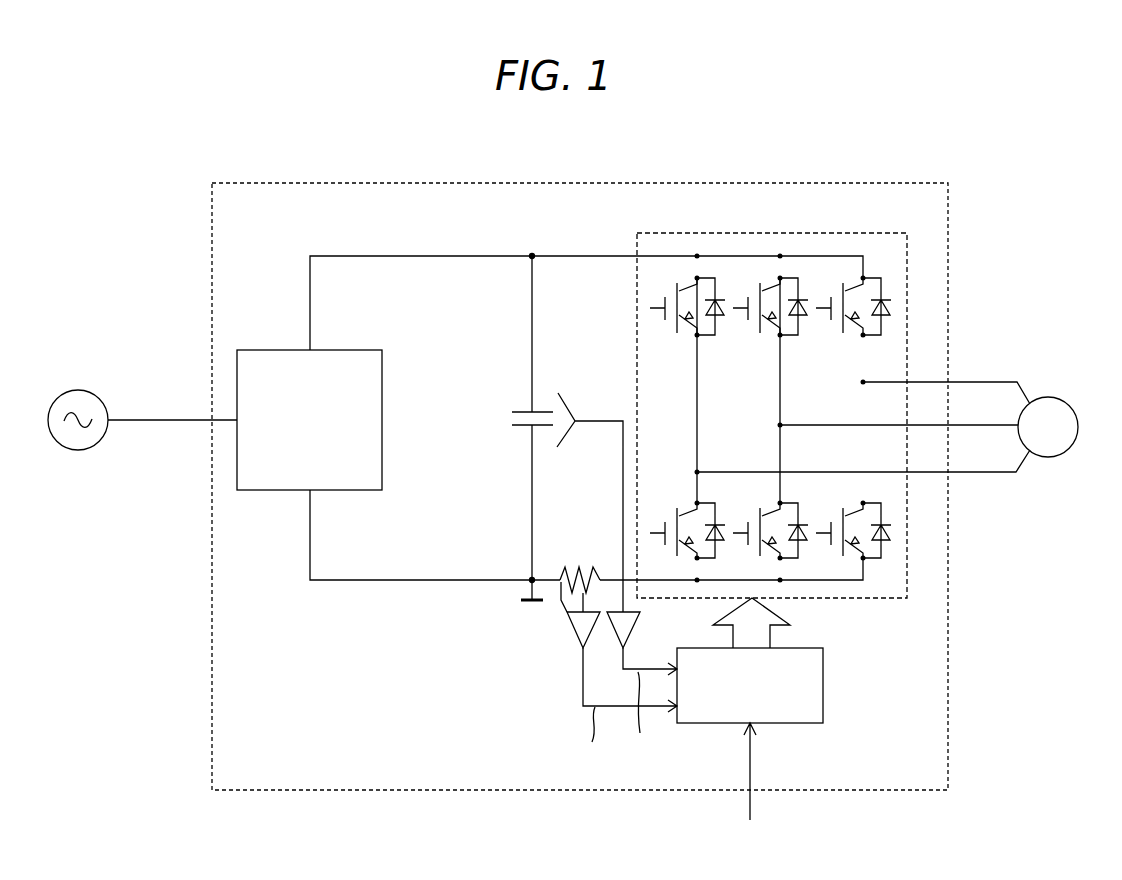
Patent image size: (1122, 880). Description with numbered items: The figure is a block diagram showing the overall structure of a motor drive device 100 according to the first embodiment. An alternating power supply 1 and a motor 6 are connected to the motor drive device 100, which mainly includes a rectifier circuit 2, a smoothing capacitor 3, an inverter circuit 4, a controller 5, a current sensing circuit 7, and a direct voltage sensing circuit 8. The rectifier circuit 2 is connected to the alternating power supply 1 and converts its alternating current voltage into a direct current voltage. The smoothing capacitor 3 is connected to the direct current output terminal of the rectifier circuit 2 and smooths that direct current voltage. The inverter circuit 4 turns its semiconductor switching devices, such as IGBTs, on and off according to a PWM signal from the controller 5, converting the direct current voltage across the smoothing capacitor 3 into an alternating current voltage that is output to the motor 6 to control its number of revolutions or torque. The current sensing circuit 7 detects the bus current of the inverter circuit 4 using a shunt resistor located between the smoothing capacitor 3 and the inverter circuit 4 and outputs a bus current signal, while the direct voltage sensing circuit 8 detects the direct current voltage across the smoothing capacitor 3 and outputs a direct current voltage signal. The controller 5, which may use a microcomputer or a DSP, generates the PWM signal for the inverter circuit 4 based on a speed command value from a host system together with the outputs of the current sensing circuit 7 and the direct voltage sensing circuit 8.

The motor drive device 100 is at (762, 184).
The alternating power supply 1 is at (70, 390).
The rectifier circuit 2 is at (348, 350).
The smoothing capacitor 3 is at (540, 396).
The inverter circuit 4 is at (832, 232).
The controller 5 is at (825, 710).
The motor 6 is at (1060, 398).
The current sensing circuit 7 is at (567, 619).
The direct voltage sensing circuit 8 is at (642, 618).